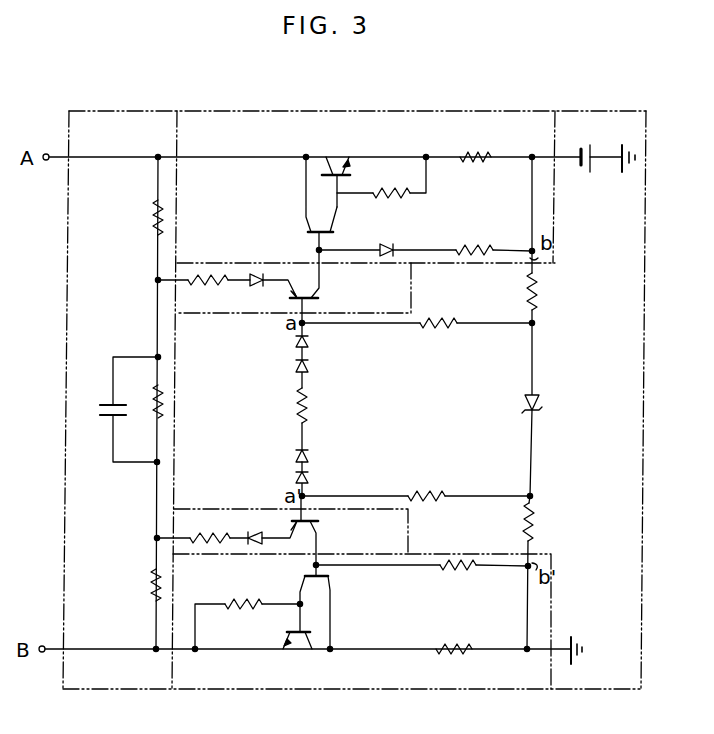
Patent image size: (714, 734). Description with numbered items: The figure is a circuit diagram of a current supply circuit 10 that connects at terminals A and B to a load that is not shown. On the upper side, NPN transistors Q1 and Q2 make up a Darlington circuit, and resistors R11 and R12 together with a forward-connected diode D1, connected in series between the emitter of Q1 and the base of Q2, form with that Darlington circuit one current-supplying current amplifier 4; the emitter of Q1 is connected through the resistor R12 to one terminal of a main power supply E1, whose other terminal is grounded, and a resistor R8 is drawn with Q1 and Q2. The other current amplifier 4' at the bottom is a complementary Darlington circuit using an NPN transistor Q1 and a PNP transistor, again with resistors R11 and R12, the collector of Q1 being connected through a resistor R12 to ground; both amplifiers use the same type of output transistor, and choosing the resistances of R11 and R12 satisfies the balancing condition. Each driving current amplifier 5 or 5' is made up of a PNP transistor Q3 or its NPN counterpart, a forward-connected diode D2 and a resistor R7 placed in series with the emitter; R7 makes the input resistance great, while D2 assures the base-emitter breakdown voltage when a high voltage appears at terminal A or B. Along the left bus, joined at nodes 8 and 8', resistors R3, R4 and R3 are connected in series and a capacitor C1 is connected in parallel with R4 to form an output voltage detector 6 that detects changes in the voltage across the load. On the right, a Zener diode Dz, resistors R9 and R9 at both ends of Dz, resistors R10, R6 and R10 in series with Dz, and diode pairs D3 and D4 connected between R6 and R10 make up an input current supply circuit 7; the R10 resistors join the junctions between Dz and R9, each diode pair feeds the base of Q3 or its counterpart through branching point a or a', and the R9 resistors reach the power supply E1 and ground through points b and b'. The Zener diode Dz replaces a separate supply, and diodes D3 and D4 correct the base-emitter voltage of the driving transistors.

The current-supplying current amplifier 4 is at (363, 385).
The other current amplifier 4' is at (362, 637).
The driving current amplifier 5 is at (293, 310).
The driving current amplifier 5' is at (291, 508).
The output voltage detector 6 is at (70, 418).
The input current supply circuit 7 is at (638, 453).
The first input node 8 is at (147, 388).
The second input node 8' is at (143, 663).
The current supply circuit 10 is at (448, 108).
The resistor R3 is at (154, 213).
The resistor R4 is at (156, 396).
The capacitor C1 is at (109, 405).
The resistor R7 is at (212, 286).
The forward-connected diode D2 is at (250, 287).
The PNP transistor Q3 is at (321, 536).
The NPN transistor Q2 is at (321, 232).
The NPN transistor Q1 is at (336, 163).
The resistor R8 is at (384, 188).
The resistor R12 is at (473, 152).
The main power supply E1 is at (580, 150).
The forward-connected diode D1 is at (388, 244).
The resistor R11 is at (478, 244).
The resistor R9 is at (536, 283).
The Zener diode Dz is at (548, 396).
The resistor R10 is at (437, 328).
The diode D3 is at (310, 342).
The diode D4 is at (310, 367).
The resistor R6 is at (310, 395).